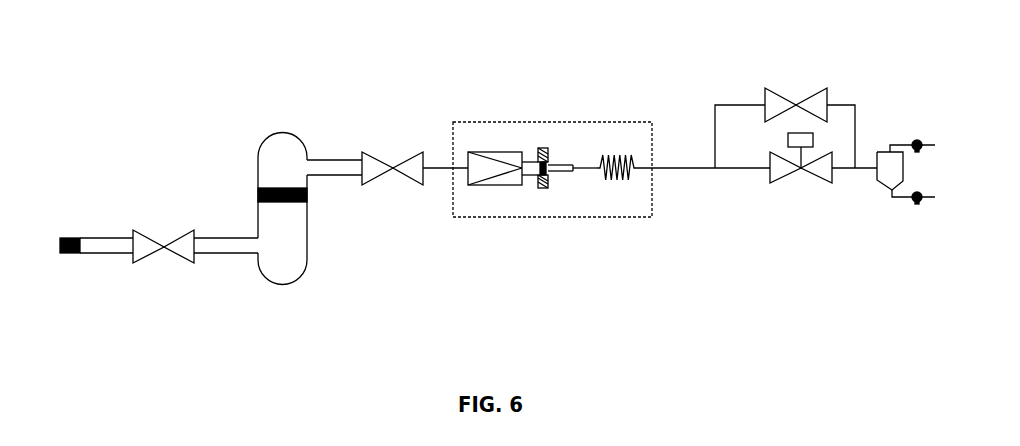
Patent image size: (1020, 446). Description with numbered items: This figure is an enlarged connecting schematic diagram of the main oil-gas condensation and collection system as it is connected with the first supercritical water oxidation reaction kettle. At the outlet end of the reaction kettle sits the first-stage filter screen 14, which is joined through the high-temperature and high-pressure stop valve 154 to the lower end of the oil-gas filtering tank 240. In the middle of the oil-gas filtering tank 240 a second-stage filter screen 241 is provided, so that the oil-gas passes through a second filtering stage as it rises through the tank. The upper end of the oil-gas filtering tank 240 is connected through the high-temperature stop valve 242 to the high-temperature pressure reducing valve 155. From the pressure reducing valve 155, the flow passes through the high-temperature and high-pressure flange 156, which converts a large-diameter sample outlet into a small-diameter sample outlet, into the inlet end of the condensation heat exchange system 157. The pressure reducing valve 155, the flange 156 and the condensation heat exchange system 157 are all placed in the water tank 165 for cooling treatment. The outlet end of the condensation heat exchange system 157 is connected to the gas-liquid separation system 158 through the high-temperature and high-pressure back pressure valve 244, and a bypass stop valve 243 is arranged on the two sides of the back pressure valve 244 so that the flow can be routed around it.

The first-stage filter screen 14 is at (67, 236).
The high-temperature and high-pressure stop valve 154 is at (152, 230).
The high-temperature pressure reducing valve 155 is at (490, 145).
The high-temperature and high-pressure flange 156 is at (547, 143).
The condensation heat exchange system 157 is at (612, 152).
The gas-liquid separation system 158 is at (898, 140).
The water tank 165 is at (578, 202).
The oil-gas filtering tank 240 is at (293, 242).
The second-stage filter screen 241 is at (282, 170).
The high-temperature stop valve 242 is at (385, 157).
The bypass stop valve 243 is at (788, 102).
The high-temperature and high-pressure back pressure valve 244 is at (790, 168).